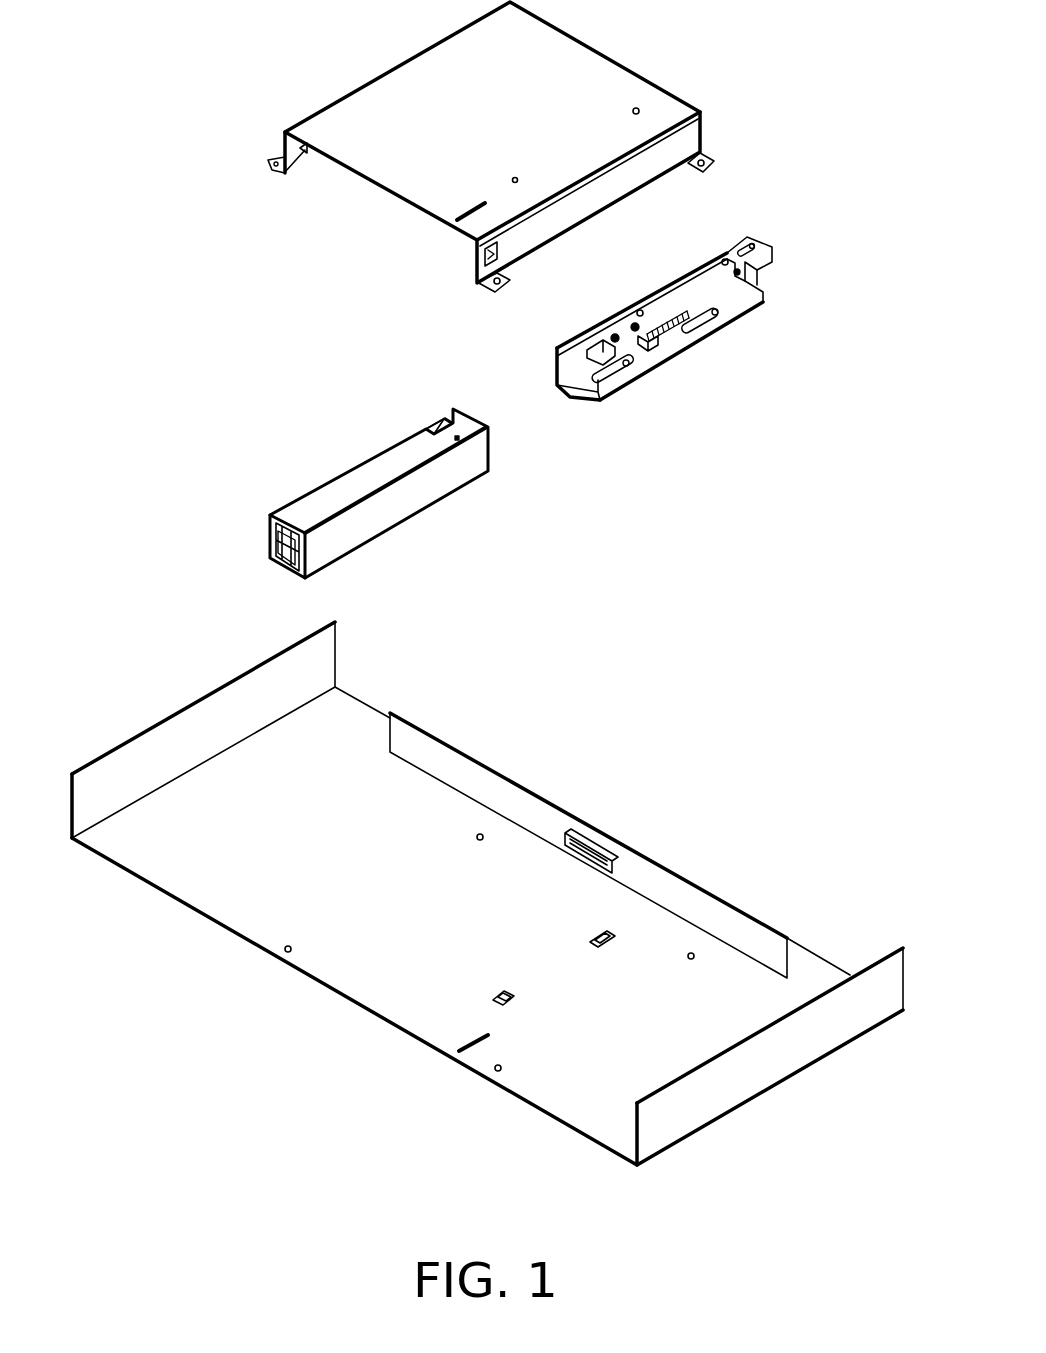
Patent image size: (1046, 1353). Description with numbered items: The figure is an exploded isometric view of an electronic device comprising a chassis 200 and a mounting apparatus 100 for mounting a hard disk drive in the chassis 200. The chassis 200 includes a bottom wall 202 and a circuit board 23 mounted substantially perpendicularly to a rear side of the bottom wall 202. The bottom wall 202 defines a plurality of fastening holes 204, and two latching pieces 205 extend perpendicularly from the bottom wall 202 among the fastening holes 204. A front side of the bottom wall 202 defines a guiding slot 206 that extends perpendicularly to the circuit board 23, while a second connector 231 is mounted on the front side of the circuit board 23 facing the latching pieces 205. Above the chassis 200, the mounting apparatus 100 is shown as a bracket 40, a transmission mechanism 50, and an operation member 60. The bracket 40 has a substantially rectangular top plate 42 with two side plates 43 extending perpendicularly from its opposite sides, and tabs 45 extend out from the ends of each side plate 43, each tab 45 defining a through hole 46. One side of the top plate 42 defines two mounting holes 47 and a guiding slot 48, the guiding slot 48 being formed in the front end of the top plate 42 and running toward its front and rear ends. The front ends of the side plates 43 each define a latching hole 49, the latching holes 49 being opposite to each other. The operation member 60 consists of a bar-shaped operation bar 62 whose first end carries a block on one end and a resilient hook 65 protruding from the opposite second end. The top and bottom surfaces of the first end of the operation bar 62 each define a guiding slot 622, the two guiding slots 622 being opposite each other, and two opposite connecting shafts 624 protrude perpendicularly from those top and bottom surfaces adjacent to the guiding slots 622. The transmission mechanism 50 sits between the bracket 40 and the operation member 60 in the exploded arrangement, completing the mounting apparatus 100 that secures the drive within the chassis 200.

The mounting apparatus 100 is at (868, 133).
The bracket 40 is at (565, 178).
The top plate 42 is at (465, 72).
The side plate 43 is at (632, 172).
The tab 45 is at (502, 284).
The through hole 46 is at (490, 289).
The mounting hole 47 is at (515, 180).
The guiding slot 48 is at (463, 213).
The latching hole 49 is at (482, 253).
The transmission mechanism 50 is at (773, 277).
The operation member 60 is at (522, 492).
The operation bar 62 is at (382, 473).
The guiding slot 622 is at (447, 425).
The connecting shaft 624 is at (459, 439).
The resilient hook 65 is at (278, 560).
The chassis 200 is at (487, 918).
The bottom wall 202 is at (567, 1127).
The fastening hole 204 is at (286, 949).
The latching piece 205 is at (492, 994).
The guiding slot 206 is at (472, 1056).
The circuit board 23 is at (588, 817).
The second connector 231 is at (600, 850).